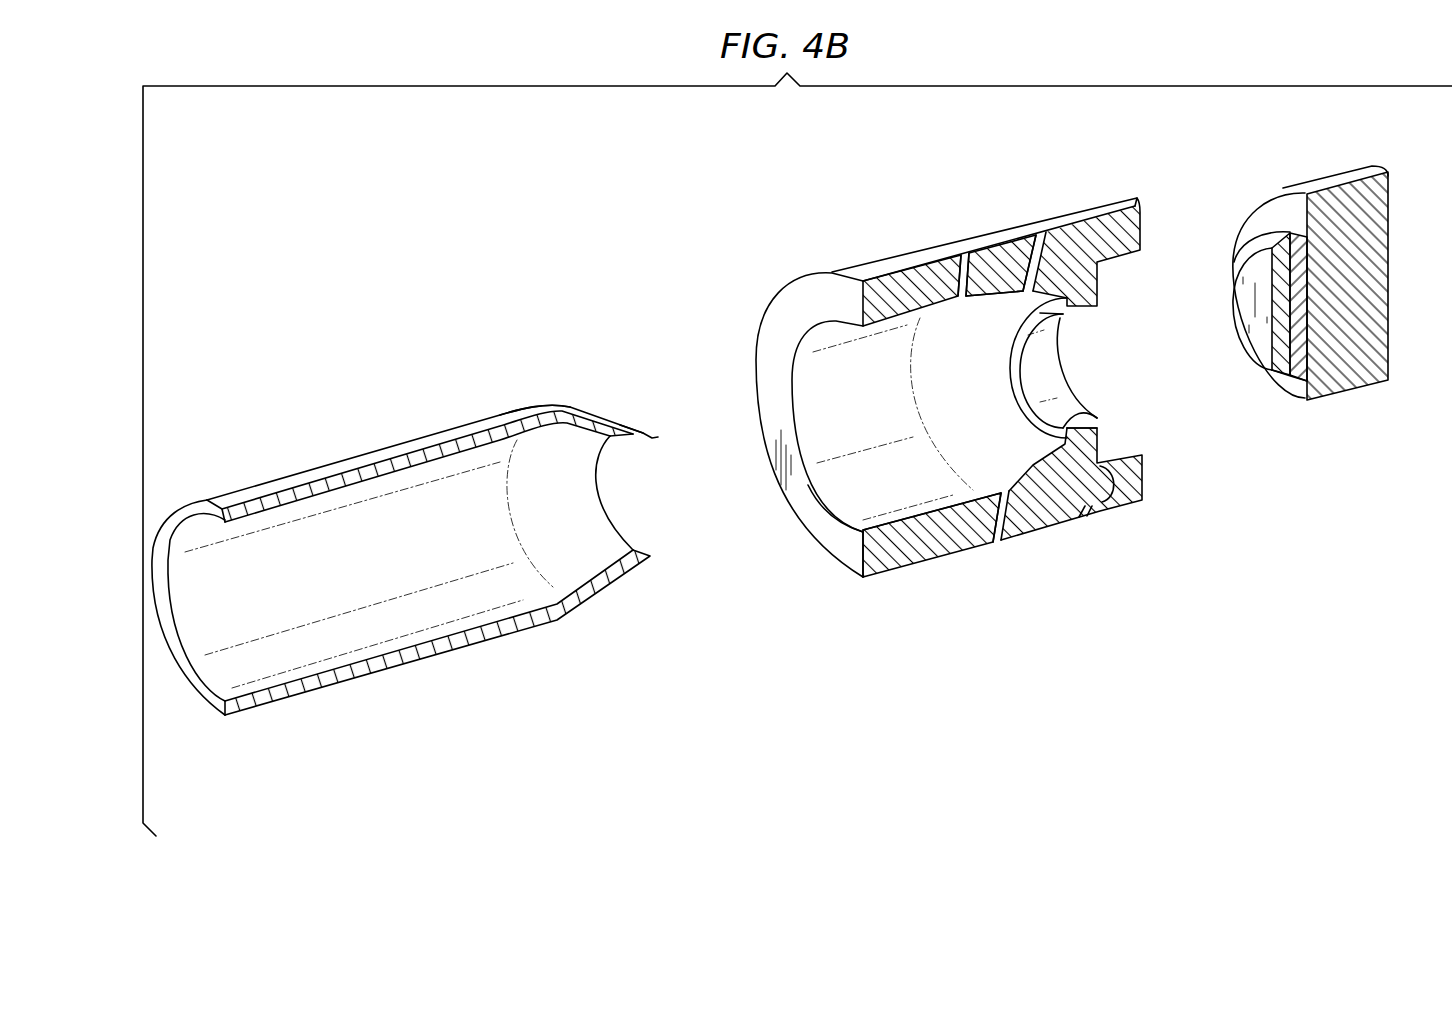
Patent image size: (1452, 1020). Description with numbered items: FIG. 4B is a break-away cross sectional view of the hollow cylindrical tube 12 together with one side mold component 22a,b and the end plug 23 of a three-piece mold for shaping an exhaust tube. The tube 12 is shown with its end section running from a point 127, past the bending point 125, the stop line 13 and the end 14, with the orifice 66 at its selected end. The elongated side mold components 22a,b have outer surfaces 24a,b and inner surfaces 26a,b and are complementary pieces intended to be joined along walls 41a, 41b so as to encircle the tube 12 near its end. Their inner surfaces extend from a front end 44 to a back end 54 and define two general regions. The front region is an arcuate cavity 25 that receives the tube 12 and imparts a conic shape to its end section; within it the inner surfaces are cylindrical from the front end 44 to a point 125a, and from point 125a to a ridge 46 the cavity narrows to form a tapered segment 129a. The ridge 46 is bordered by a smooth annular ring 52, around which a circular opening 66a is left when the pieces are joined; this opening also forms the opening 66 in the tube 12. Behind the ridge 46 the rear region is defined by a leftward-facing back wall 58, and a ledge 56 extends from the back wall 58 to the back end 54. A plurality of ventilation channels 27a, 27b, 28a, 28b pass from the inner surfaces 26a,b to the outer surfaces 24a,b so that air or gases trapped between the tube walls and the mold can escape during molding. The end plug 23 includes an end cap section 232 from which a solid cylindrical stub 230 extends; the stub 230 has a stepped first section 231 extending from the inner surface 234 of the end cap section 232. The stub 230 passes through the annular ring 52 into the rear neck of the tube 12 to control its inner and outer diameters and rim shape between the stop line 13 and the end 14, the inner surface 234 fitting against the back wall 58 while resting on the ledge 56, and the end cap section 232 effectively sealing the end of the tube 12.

The hollow cylindrical tube 12 is at (436, 519).
The stop line 13 is at (647, 437).
The end of tube 14 is at (643, 432).
The bending point 125 is at (542, 404).
The point 127 is at (380, 452).
The orifice 66 is at (645, 524).
The side mold components 22a,b is at (961, 380).
The outer surfaces 24a,b is at (858, 273).
The arcuate cavity 25 is at (812, 400).
The inner surfaces 26a,b is at (850, 500).
The ventilation channel 27a is at (967, 250).
The ventilation channel 27b is at (1010, 533).
The ventilation channel 28a is at (1040, 230).
The ventilation channel 28b is at (1085, 513).
The wall 41a is at (900, 290).
The wall 41b is at (905, 548).
The front end 44 is at (848, 545).
The ridge 46 is at (1085, 410).
The annular ring 52 is at (1050, 386).
The back end 54 is at (1147, 478).
The ledge 56 is at (1120, 502).
The back wall 58 is at (1100, 418).
The opening 66a is at (1106, 331).
The point 125a is at (992, 298).
The tapered segment 129a is at (1012, 300).
The end plug 23 is at (1313, 281).
The solid cylindrical stub 230 is at (1253, 327).
The first section 231 is at (1273, 250).
The end cap section 232 is at (1343, 177).
The inner surface 234 is at (1253, 223).